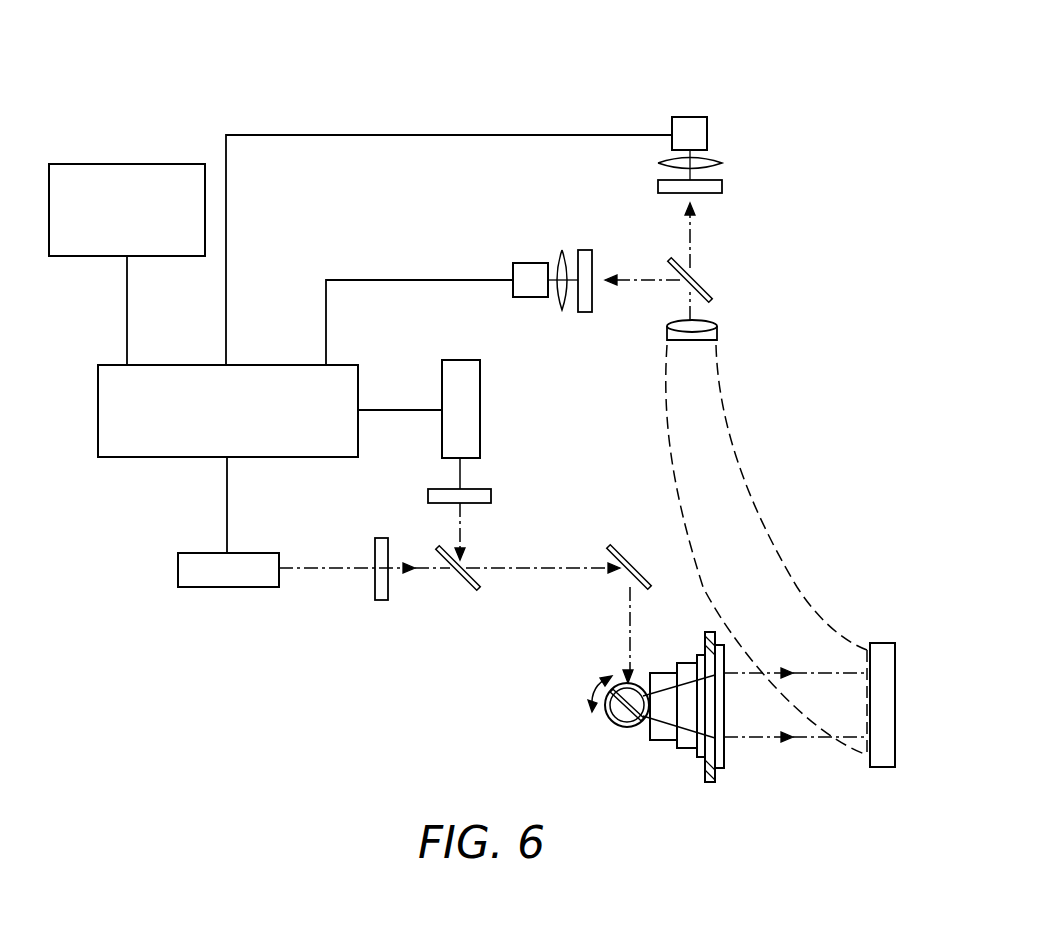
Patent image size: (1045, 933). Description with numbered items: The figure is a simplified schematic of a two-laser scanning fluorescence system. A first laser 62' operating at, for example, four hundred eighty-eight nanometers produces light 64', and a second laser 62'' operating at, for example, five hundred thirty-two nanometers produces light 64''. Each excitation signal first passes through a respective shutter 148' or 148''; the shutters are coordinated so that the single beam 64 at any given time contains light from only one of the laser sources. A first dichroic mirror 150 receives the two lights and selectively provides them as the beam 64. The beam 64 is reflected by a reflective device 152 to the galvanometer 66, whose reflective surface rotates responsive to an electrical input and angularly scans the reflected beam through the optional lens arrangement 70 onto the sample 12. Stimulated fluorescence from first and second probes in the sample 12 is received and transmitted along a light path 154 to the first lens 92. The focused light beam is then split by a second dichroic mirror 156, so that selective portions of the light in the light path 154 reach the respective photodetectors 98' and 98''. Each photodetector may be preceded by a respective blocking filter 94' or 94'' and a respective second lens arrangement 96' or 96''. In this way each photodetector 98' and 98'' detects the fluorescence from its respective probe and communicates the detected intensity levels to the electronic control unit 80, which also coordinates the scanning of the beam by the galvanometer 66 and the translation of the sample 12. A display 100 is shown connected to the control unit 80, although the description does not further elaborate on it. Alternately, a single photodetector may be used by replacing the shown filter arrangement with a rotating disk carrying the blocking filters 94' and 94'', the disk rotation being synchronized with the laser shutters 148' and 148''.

The display 100 is at (148, 163).
The electronic control unit 80 is at (177, 458).
The first laser 62' is at (212, 588).
The second laser 62'' is at (506, 399).
The shutter 148' is at (346, 587).
The shutter 148'' is at (493, 475).
The light from first laser 64' is at (364, 537).
The light from second laser 64'' is at (501, 509).
The beam 64 is at (549, 623).
The first dichroic mirror 150 is at (470, 582).
The reflective device 152 is at (622, 548).
The galvanometer 66 is at (612, 722).
The focusing lens 70 is at (690, 640).
The sample 12 is at (885, 643).
The light path 154 is at (737, 480).
The first lens 92 is at (707, 325).
The second dichroic mirror 156 is at (710, 283).
The blocking filter 94' is at (719, 201).
The second lens arrangement 96' is at (713, 156).
The photodetector 98' is at (717, 123).
The blocking filter 94'' is at (613, 260).
The second lens arrangement 96'' is at (555, 260).
The photodetector 98'' is at (505, 269).